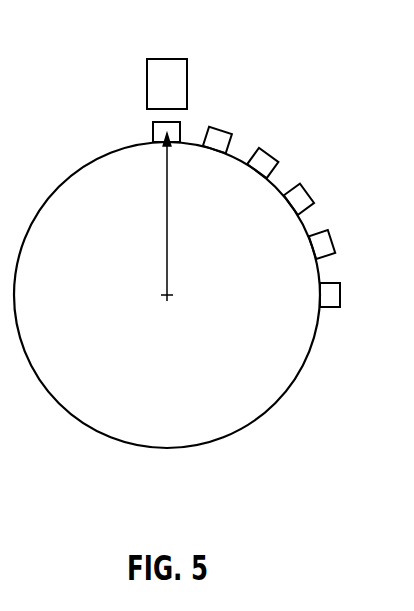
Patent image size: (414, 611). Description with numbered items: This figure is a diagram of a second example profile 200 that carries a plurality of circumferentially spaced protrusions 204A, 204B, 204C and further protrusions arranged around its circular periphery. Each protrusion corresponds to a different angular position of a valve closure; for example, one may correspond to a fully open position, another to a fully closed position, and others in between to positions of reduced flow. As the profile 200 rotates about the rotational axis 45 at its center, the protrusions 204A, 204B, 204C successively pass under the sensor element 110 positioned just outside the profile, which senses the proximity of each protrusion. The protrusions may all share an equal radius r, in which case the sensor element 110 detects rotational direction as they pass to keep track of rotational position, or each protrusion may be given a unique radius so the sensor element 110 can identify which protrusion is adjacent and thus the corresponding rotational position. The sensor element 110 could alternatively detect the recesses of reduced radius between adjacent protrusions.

The second example profile 200 is at (289, 98).
The rotational axis 45 is at (170, 298).
The radius r is at (167, 213).
The sensor element 110 is at (157, 75).
The protrusion 204A is at (150, 132).
The protrusion 204B is at (219, 140).
The protrusion 204C is at (268, 162).